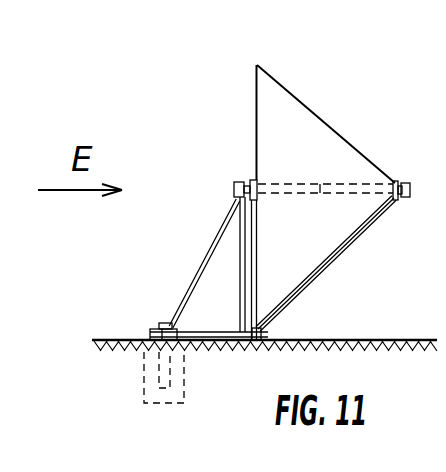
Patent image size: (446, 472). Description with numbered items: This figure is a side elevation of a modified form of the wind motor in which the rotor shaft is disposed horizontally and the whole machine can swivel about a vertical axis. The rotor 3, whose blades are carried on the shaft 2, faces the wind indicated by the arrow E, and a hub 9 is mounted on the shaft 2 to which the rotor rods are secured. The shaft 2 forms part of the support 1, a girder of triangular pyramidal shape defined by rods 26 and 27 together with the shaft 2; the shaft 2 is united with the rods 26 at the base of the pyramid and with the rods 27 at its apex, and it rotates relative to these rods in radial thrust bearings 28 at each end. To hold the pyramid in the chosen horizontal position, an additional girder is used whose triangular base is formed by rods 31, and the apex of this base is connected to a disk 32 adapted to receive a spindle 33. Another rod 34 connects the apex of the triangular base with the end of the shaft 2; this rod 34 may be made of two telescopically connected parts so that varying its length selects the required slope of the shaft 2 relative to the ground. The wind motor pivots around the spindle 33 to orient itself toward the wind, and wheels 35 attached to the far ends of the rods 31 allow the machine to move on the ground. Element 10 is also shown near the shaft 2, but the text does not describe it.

The support 1 is at (386, 220).
The shaft 2 is at (368, 186).
The rotor 3 is at (329, 123).
The hub 9 is at (252, 181).
The boom member 10 is at (367, 195).
The rods 26 is at (340, 251).
The rods 27 is at (240, 312).
The radial thrust bearings 28 is at (235, 184).
The rods 31 is at (225, 341).
The disk 32 is at (150, 334).
The spindle 33 is at (163, 323).
The rod 34 is at (211, 258).
The wheels 35 is at (262, 336).